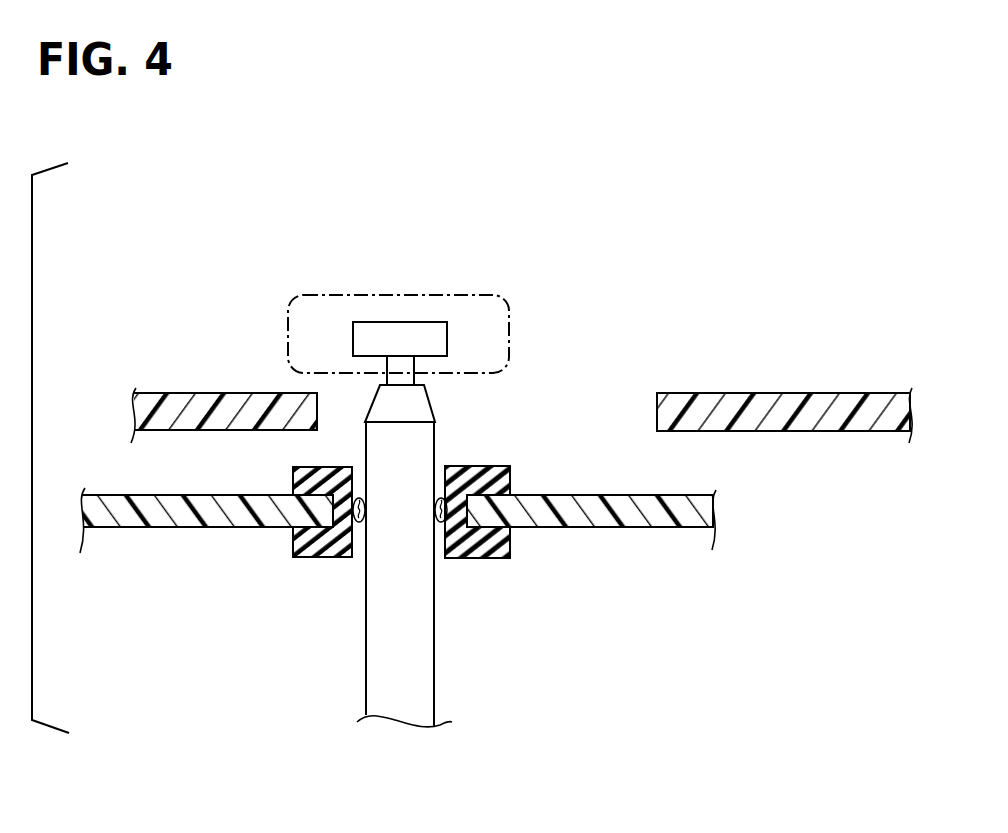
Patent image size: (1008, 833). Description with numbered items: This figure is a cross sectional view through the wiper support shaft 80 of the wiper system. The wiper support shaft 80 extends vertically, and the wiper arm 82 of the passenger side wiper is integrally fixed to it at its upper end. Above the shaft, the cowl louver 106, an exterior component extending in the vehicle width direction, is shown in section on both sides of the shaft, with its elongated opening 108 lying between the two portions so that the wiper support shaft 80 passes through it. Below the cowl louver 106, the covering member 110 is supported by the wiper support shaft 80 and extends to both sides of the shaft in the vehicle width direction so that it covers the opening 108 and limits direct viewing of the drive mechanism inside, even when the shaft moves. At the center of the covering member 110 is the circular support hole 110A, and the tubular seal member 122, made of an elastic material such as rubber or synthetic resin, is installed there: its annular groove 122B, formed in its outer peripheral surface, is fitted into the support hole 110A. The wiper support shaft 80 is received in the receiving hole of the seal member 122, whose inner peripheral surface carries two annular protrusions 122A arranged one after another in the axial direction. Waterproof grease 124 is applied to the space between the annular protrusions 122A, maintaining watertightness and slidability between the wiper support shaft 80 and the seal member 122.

The wiper support shaft 80 is at (435, 443).
The wiper arm 82 is at (503, 300).
The cowl louver 106 is at (780, 393).
The opening 108 is at (656, 416).
The covering member 110 is at (678, 527).
The support hole 110A is at (461, 528).
The seal member 122 is at (309, 563).
The annular protrusions 122A is at (363, 505).
The annular groove 122B is at (288, 507).
The waterproof grease 124 is at (438, 518).